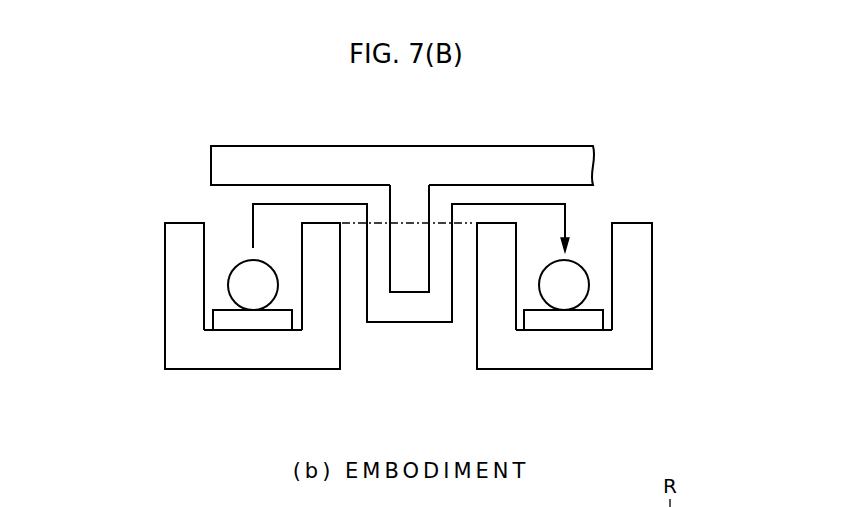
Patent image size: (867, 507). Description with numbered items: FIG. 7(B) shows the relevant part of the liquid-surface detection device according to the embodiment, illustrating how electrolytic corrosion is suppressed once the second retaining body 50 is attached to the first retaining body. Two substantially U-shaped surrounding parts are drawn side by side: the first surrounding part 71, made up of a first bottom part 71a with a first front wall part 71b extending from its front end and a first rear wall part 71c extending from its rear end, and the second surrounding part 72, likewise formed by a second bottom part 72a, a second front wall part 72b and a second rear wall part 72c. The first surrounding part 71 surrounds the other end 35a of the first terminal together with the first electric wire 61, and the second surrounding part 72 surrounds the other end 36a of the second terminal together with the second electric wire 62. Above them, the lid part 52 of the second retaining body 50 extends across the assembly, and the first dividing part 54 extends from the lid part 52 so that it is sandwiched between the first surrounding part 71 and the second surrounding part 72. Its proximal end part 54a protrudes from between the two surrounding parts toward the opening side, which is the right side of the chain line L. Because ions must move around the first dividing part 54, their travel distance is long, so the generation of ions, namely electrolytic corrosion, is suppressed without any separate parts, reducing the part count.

The second retaining body 50 is at (232, 126).
The lid part 52 is at (547, 162).
The first dividing part 54 is at (410, 258).
The proximal end part 54a is at (408, 203).
The chain line L is at (463, 222).
The first surrounding part 71 is at (150, 218).
The first bottom part 71a is at (246, 369).
The first front wall part 71b is at (165, 287).
The first rear wall part 71c is at (341, 352).
The second surrounding part 72 is at (658, 218).
The second bottom part 72a is at (557, 369).
The second front wall part 72b is at (477, 354).
The second rear wall part 72c is at (652, 286).
The other end of the first terminal 35a is at (221, 314).
The other end of the second terminal 36a is at (532, 317).
The first electric wire 61 is at (258, 280).
The second electric wire 62 is at (568, 280).